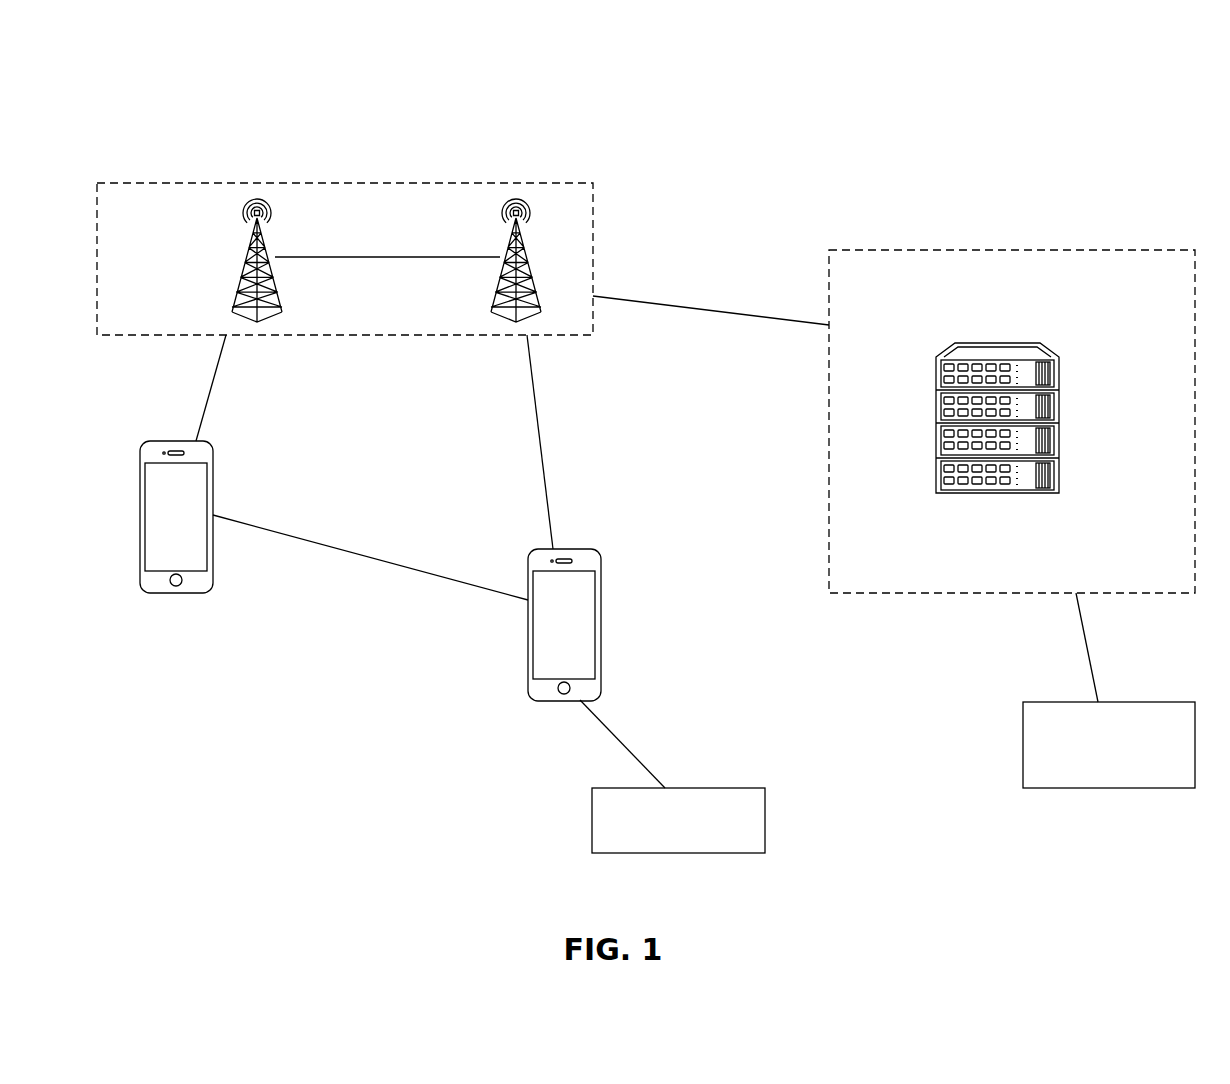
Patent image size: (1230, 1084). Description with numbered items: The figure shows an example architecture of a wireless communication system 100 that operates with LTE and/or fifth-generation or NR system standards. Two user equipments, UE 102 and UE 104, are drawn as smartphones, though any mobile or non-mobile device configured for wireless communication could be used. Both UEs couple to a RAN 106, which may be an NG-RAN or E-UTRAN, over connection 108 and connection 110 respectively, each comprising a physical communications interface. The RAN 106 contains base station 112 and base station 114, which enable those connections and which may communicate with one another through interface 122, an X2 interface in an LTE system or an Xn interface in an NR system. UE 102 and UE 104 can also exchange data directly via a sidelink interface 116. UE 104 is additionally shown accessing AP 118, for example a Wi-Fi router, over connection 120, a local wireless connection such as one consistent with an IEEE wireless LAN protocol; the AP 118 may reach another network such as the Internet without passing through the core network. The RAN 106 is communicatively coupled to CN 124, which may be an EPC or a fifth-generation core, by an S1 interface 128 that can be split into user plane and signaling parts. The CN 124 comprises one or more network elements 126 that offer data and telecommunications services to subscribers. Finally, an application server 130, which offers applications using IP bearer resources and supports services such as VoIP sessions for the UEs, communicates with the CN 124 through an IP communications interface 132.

The wireless communication system 100 is at (1113, 103).
The UE 102 is at (140, 470).
The UE 104 is at (601, 587).
The RAN 106 is at (350, 183).
The connection 108 is at (222, 382).
The connection 110 is at (537, 418).
The base station 112 is at (253, 225).
The base station 114 is at (512, 225).
The sidelink interface 116 is at (362, 555).
The AP 118 is at (592, 835).
The connection 120 is at (615, 733).
The interface 122 is at (337, 258).
The CN 124 is at (1014, 250).
The network elements 126 is at (1060, 378).
The S1 interface 128 is at (676, 306).
The application server 130 is at (1023, 720).
The IP communications interface 132 is at (1092, 660).